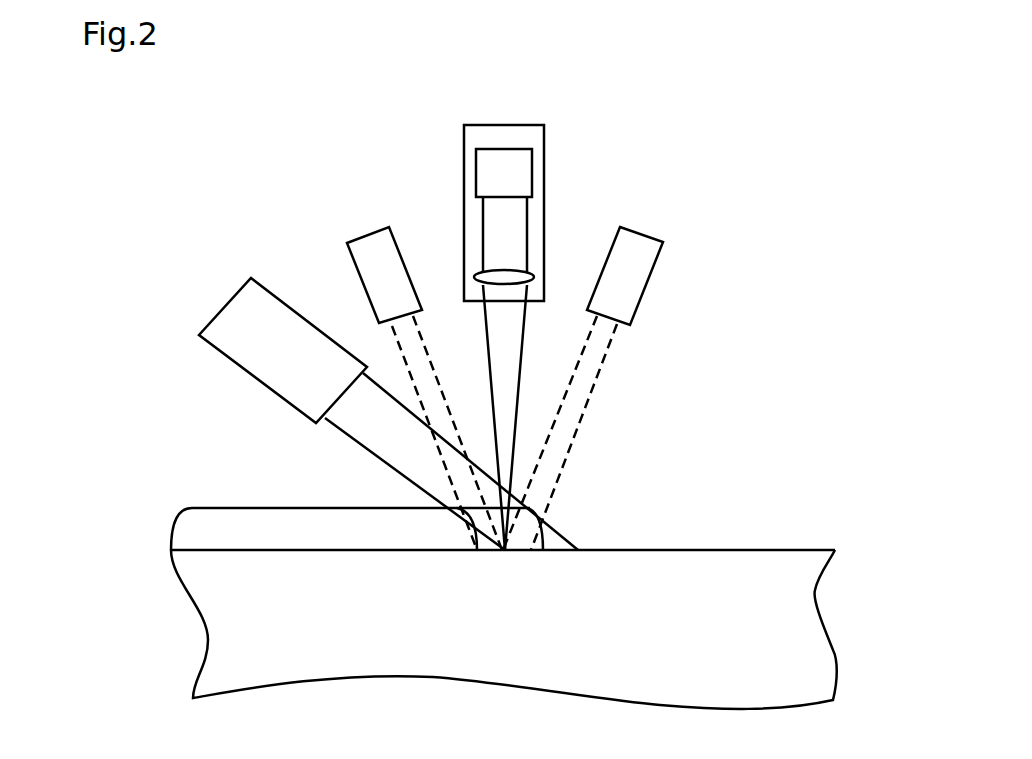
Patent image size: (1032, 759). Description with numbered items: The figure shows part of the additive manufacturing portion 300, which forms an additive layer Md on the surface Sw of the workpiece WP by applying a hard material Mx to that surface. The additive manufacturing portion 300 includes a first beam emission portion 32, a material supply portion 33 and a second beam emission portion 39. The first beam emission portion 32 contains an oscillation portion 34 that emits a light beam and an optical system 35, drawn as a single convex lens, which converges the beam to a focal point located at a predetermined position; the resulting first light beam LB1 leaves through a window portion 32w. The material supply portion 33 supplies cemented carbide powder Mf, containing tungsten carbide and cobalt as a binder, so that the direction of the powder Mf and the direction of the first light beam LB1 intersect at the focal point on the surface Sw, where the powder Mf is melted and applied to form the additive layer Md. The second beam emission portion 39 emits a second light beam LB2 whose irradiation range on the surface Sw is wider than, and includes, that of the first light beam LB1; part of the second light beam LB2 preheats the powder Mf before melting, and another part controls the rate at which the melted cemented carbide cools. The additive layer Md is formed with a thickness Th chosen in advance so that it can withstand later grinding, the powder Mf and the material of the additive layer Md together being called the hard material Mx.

The additive manufacturing portion 300 is at (785, 223).
The first beam emission portion 32 is at (497, 201).
The window portion 32w is at (470, 308).
The material supply portion 33 is at (360, 238).
The oscillation portion 34 is at (532, 170).
The optical system 35 is at (490, 272).
The second beam emission portion 39 is at (197, 322).
The first light beam LB1 is at (517, 405).
The second light beam LB2 is at (400, 477).
The workpiece WP is at (705, 560).
The surface Sw is at (753, 550).
The thickness Th is at (222, 483).
The additive layer Md is at (285, 525).
The cemented carbide powder Mf is at (567, 462).
The hard material Mx is at (500, 529).